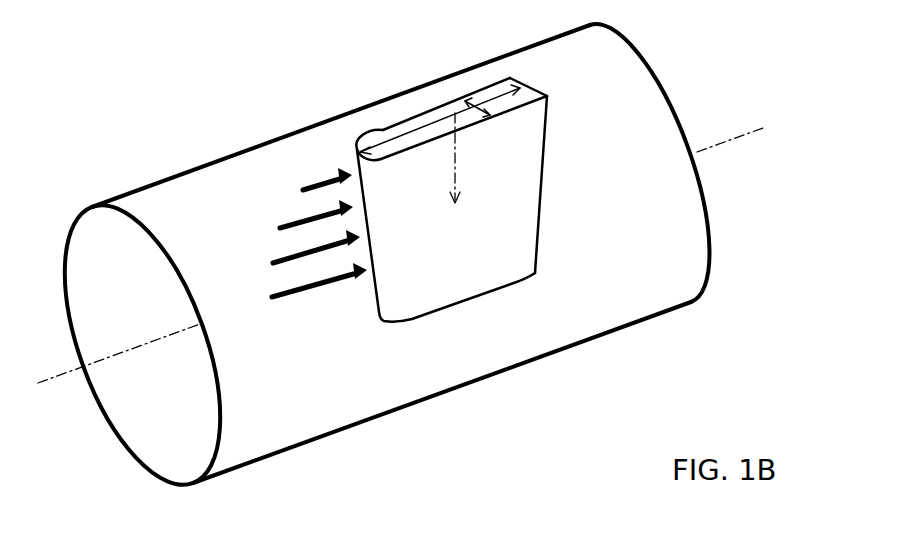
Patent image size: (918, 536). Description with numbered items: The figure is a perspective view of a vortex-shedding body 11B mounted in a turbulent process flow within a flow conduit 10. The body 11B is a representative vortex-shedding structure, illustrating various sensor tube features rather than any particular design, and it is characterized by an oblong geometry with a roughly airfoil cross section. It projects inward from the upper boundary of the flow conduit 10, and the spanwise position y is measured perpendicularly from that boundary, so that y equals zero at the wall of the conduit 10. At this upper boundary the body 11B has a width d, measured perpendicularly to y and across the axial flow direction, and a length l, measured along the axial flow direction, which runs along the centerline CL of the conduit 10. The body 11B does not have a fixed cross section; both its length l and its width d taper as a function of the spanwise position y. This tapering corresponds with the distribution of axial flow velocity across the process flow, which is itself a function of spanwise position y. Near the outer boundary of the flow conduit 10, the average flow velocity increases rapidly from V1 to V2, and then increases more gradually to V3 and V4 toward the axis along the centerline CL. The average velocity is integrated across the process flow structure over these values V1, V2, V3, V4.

The flow conduit 10 is at (172, 176).
The vortex-shedding body 11B is at (525, 222).
The centerline CL is at (403, 259).
The length l is at (418, 133).
The width d is at (466, 101).
The spanwise position y is at (445, 174).
The average flow velocity V1 is at (315, 187).
The average flow velocity V2 is at (304, 225).
The average flow velocity V3 is at (303, 258).
The average flow velocity V4 is at (306, 292).